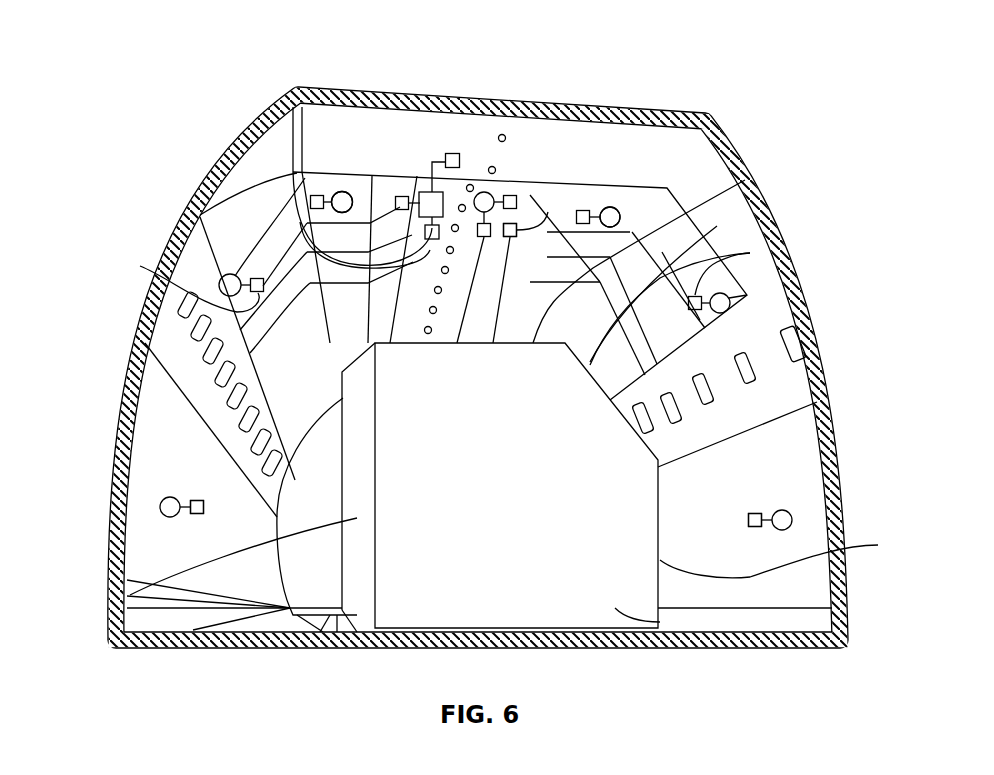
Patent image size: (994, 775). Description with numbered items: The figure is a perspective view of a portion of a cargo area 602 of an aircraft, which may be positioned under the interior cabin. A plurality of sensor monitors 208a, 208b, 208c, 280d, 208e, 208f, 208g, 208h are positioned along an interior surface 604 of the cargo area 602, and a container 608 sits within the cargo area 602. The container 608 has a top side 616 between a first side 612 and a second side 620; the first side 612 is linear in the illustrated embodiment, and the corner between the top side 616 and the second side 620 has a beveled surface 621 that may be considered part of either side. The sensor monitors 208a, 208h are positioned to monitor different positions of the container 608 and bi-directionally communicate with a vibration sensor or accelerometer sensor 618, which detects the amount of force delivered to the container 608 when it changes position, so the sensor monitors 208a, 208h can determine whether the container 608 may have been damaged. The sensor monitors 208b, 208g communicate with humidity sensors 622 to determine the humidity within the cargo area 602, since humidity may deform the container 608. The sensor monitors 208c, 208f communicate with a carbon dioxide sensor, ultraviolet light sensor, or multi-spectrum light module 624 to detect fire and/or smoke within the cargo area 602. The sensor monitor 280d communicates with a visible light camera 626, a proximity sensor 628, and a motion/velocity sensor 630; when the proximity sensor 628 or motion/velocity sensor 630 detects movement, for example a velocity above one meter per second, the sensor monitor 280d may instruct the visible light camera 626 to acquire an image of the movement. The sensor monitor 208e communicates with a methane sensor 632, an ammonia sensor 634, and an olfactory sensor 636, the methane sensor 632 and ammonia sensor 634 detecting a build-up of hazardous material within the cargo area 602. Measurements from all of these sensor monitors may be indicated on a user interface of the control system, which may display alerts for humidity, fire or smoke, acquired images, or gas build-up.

The cargo area 602 is at (232, 201).
The interior surface 604 is at (248, 584).
The container 608 is at (660, 628).
The first side 612 is at (125, 596).
The top side 616 is at (712, 150).
The vibration sensor or accelerometer sensor 618 is at (197, 516).
The second side 620 is at (789, 555).
The beveled surface 621 is at (717, 226).
The humidity sensor 622 is at (750, 253).
The carbon dioxide sensor, ultraviolet light sensor, or multi-spectrum light module 624 is at (342, 191).
The visible light camera 626 is at (402, 197).
The proximity sensor 628 is at (452, 153).
The motion/velocity sensor 630 is at (297, 107).
The methane sensor 632 is at (445, 192).
The ammonia sensor 634 is at (560, 186).
The olfactory sensor 636 is at (513, 197).
The sensor monitor 208a is at (170, 496).
The sensor monitor 208b is at (228, 274).
The sensor monitor 208c is at (372, 176).
The sensor 280d is at (317, 195).
The sensor monitor 208e is at (474, 204).
The sensor monitor 208f is at (588, 210).
The sensor monitor 208g is at (722, 293).
The sensor monitor 208h is at (783, 511).